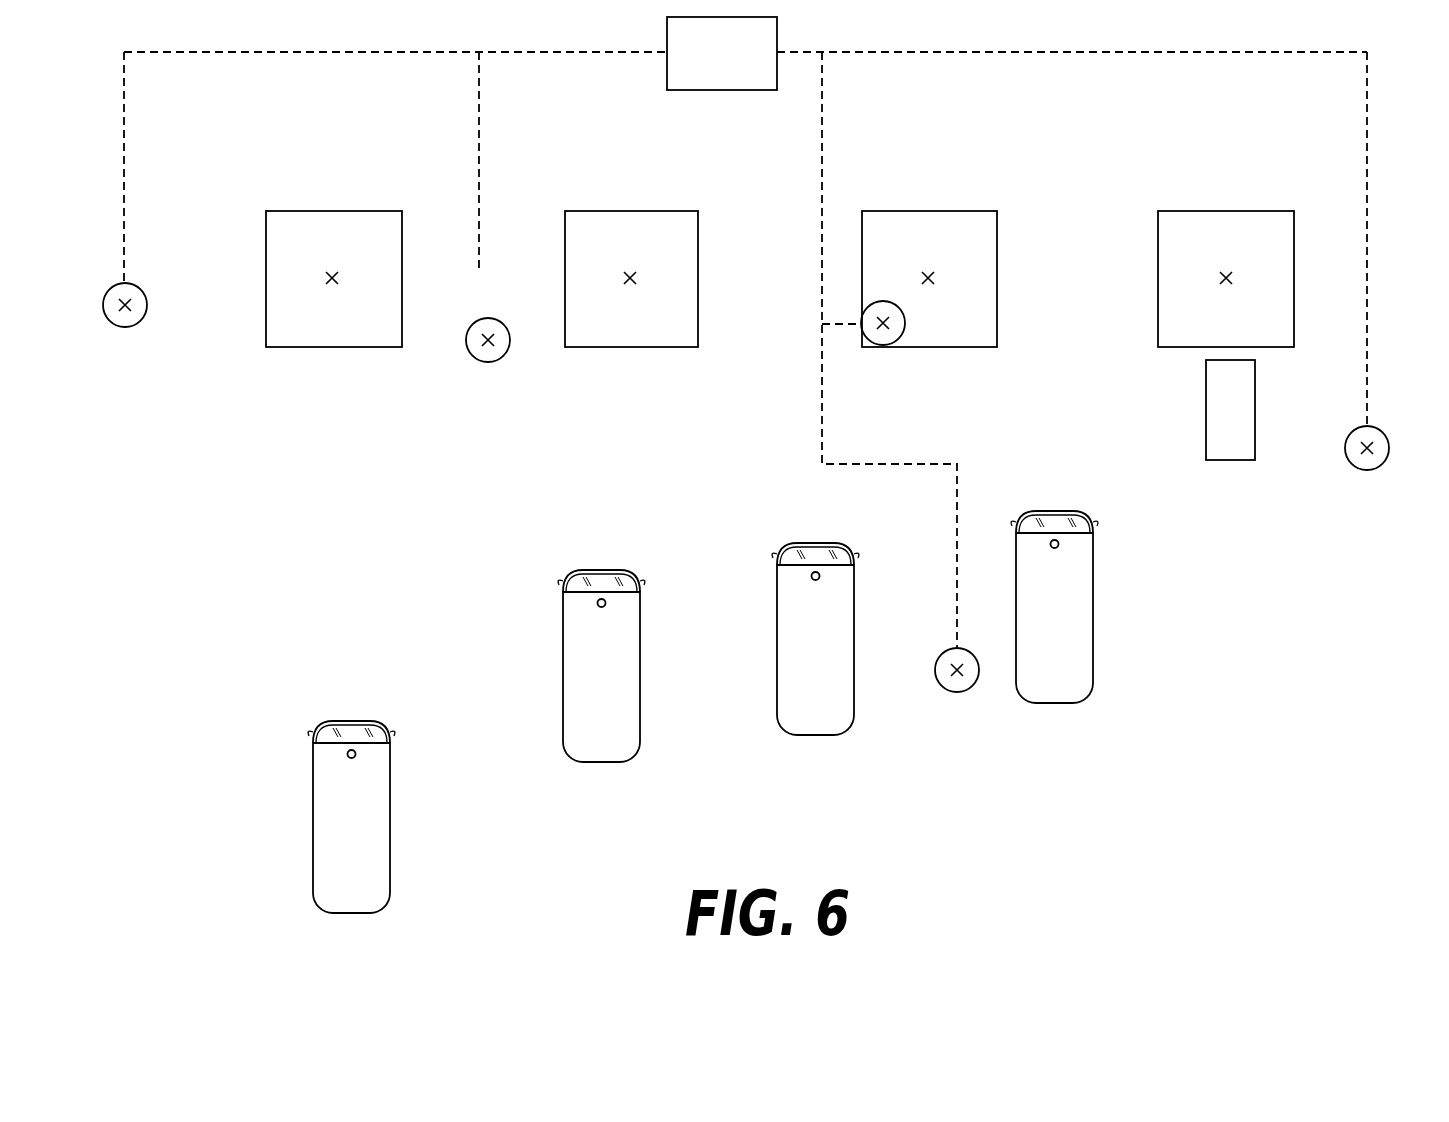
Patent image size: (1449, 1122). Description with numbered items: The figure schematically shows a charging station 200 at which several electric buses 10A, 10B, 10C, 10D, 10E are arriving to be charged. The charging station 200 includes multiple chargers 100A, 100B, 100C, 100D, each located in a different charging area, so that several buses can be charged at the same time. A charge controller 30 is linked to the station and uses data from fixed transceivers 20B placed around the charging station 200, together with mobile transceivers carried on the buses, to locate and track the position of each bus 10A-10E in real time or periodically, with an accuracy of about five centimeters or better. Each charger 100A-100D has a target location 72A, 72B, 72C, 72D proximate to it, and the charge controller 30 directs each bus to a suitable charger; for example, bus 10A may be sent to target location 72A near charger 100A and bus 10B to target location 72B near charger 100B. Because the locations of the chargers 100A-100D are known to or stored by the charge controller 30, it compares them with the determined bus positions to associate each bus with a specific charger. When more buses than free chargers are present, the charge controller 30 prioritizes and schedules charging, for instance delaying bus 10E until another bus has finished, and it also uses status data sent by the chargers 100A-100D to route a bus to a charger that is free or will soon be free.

The charging station 200 is at (232, 133).
The charge controller 30 is at (733, 72).
The charger 100A is at (335, 226).
The charger 100B is at (632, 226).
The charger 100C is at (932, 226).
The charger 100D is at (1227, 226).
The target location 72A is at (335, 281).
The target location 72B is at (633, 281).
The target location 72C is at (931, 281).
The target location 72D is at (1229, 281).
The fixed transceiver 20B is at (128, 327).
The bus 10A is at (353, 818).
The bus 10B is at (603, 667).
The bus 10C is at (813, 635).
The bus 10D is at (1053, 600).
The bus 10E is at (1230, 411).